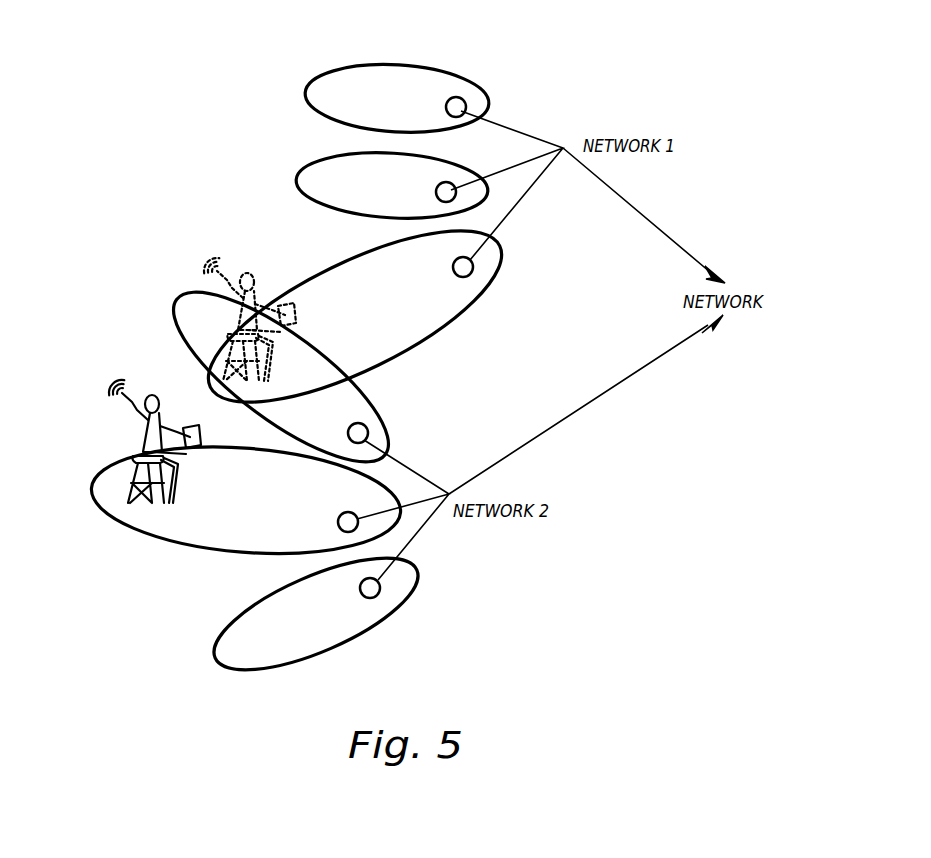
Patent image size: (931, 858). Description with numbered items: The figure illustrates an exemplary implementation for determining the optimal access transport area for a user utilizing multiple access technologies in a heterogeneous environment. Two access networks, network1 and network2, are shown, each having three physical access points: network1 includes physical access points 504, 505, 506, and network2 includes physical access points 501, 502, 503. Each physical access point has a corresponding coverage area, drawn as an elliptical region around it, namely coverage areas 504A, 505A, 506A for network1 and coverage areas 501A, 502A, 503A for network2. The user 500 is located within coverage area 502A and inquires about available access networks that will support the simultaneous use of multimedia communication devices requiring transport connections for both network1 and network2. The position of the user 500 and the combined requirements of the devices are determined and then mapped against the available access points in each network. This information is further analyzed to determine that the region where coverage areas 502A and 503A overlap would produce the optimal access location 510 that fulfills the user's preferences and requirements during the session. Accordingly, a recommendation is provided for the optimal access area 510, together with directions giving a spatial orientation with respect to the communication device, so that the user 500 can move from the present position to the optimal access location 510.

The user 500 is at (133, 428).
The optimal access location 510 is at (237, 345).
The physical access point 501 is at (380, 589).
The physical access point 502 is at (338, 521).
The physical access point 503 is at (368, 430).
The physical access point 504 is at (474, 267).
The physical access point 505 is at (452, 186).
The physical access point 506 is at (461, 99).
The coverage area 501A is at (215, 656).
The coverage area 502A is at (148, 537).
The coverage area 503A is at (184, 303).
The coverage area 504A is at (340, 265).
The coverage area 505A is at (300, 181).
The coverage area 506A is at (307, 90).